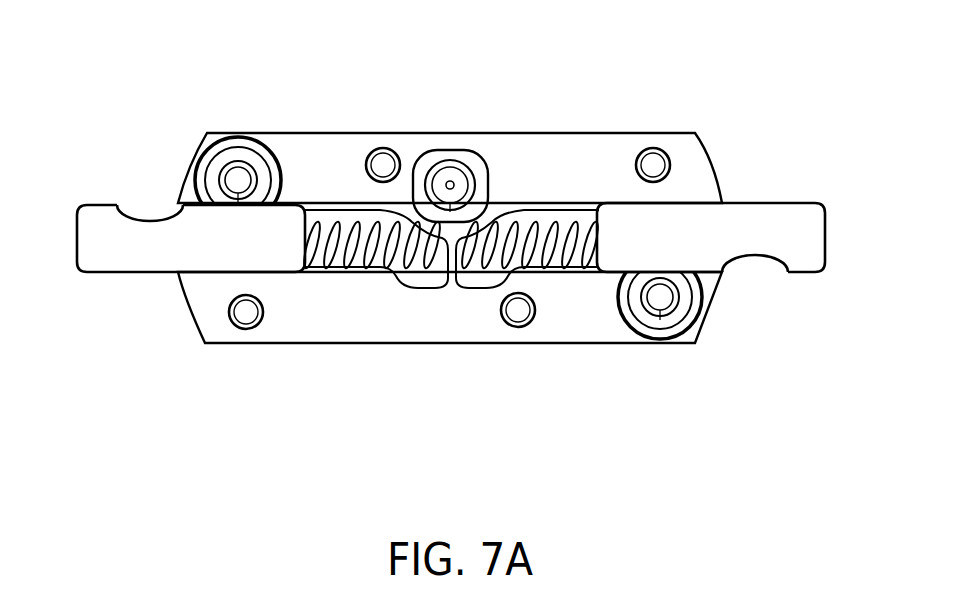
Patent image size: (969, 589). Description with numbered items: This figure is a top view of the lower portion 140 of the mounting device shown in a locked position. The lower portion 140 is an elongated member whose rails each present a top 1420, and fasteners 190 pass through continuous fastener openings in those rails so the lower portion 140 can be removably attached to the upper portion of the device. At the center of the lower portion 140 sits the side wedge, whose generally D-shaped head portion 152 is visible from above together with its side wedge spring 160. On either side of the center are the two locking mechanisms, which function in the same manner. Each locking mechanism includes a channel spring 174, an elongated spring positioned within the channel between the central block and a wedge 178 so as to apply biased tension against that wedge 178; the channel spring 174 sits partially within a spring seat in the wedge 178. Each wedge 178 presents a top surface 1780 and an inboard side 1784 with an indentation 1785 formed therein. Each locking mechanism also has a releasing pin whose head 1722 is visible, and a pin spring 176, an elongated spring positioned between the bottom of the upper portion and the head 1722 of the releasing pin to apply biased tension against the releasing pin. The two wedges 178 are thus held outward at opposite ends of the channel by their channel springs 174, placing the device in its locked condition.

The lower portion 140 is at (450, 185).
The top 1420 is at (603, 132).
The D-shaped head portion 152 is at (475, 139).
The side wedge spring 160 is at (468, 167).
The channel spring 174 is at (408, 282).
The pin spring 176 is at (227, 162).
The head 1722 is at (474, 250).
The wedge 178 is at (447, 245).
The top surface 1780 is at (453, 245).
The inboard side 1784 is at (102, 203).
The indentation 1785 is at (148, 219).
The fastener 190 is at (383, 160).